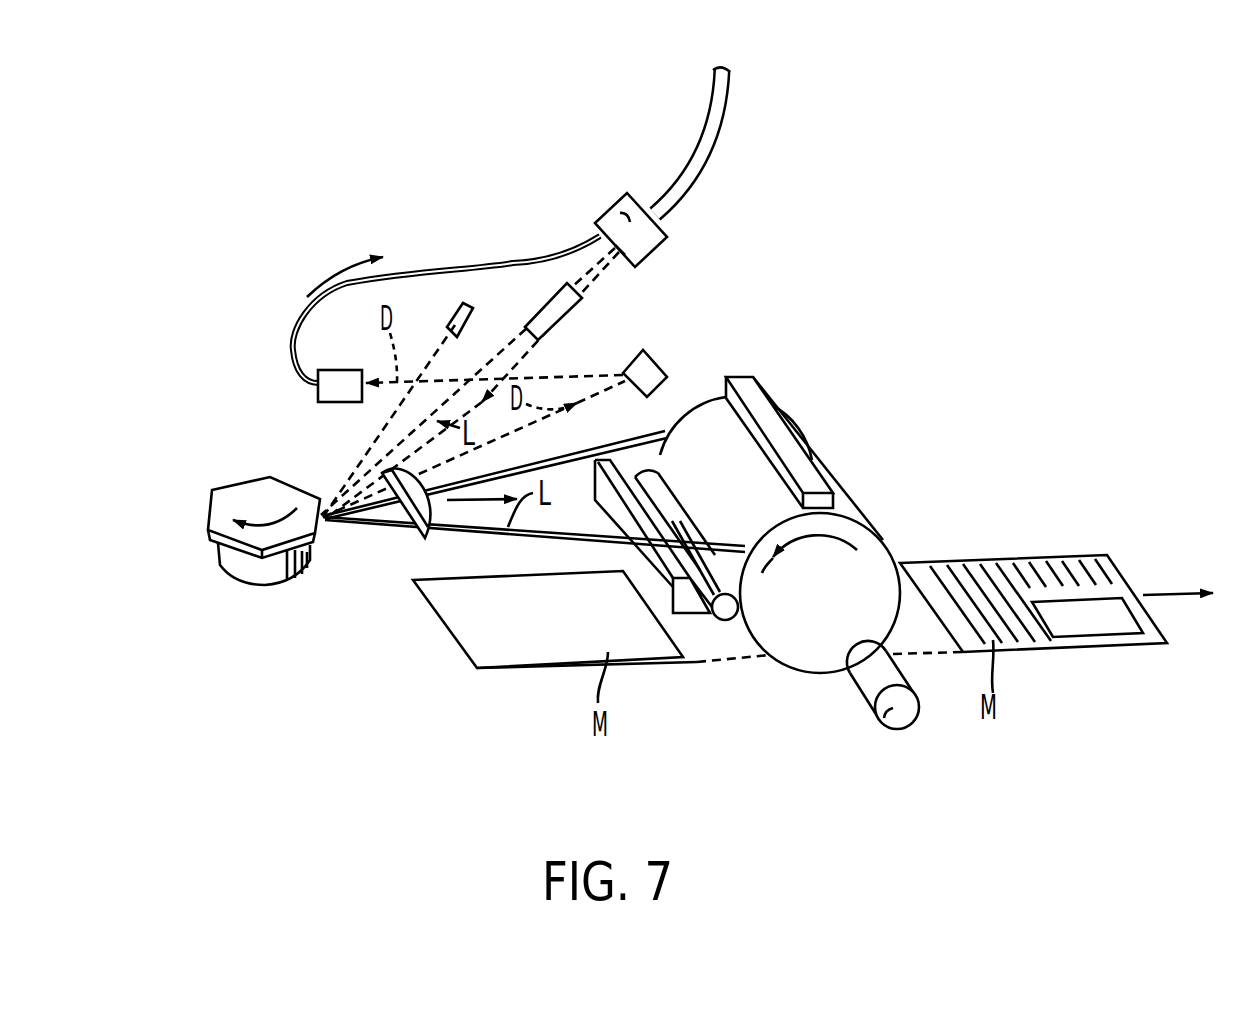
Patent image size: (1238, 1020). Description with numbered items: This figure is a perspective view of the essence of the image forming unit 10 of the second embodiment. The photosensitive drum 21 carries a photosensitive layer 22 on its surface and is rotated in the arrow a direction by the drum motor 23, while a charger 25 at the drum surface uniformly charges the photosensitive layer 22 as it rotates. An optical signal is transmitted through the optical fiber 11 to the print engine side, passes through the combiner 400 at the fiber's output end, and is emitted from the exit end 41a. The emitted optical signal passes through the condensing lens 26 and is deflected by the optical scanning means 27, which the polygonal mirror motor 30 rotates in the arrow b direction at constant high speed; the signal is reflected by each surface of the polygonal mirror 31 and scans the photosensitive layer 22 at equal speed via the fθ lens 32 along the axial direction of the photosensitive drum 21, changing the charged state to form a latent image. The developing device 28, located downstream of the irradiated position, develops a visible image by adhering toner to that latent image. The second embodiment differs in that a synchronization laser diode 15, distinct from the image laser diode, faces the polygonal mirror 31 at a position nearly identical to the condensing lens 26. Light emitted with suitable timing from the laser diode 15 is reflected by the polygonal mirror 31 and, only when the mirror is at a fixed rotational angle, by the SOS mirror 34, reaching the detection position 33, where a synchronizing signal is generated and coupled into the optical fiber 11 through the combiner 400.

The image forming unit 10 is at (532, 680).
The optical fiber 11 is at (703, 130).
The laser diode 15 is at (447, 313).
The photosensitive drum 21 is at (800, 640).
The photosensitive layer 22 is at (850, 490).
The drum motor 23 is at (893, 708).
The charger 25 is at (788, 445).
The condensing lens 26 is at (553, 312).
The optical scanning means 27 is at (276, 592).
The developing device 28 is at (697, 600).
The polygonal mirror motor 30 is at (248, 591).
The polygonal mirror 31 is at (268, 550).
The fθ lens 32 is at (410, 530).
The detection position 33 is at (340, 403).
The SOS mirror 34 is at (657, 360).
The combiner 400 is at (620, 215).
The exit end 41a is at (620, 260).